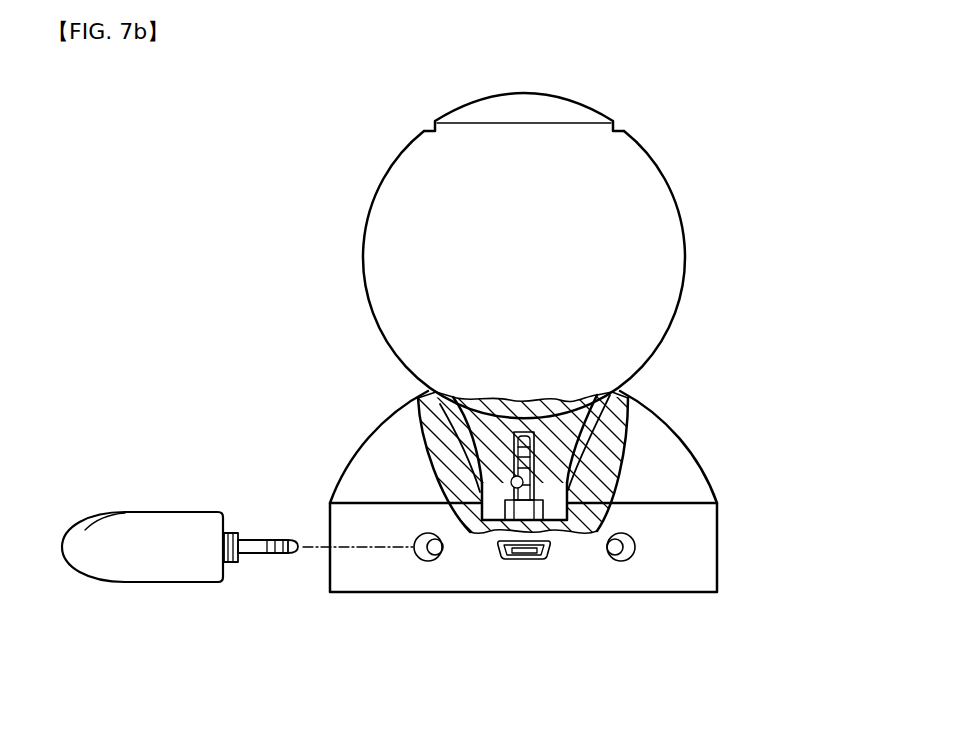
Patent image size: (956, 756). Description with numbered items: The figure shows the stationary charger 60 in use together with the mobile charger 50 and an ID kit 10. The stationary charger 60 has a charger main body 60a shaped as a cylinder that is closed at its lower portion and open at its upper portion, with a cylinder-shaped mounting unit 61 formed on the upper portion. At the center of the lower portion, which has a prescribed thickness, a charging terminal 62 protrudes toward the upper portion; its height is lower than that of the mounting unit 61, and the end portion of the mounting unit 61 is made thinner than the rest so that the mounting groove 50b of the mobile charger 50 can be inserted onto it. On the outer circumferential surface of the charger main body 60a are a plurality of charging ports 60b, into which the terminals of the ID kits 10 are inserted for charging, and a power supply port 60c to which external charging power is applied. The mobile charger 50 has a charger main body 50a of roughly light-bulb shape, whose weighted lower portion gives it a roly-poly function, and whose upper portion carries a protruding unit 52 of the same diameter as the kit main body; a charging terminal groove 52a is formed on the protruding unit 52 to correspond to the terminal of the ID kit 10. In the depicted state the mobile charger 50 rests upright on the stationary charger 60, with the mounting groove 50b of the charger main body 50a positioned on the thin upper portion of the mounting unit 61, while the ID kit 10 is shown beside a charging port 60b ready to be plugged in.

The ID kit 10 is at (162, 498).
The mobile charger 50 is at (463, 251).
The charger main body 50a is at (412, 193).
The mounting groove 50b is at (433, 127).
The protruding unit 52 is at (515, 456).
The charging terminal groove 52a is at (511, 481).
The stationary charger 60 is at (593, 532).
The charger main body 60a is at (698, 551).
The charging ports 60b is at (425, 562).
The power supply port 60c is at (518, 562).
The mounting unit 61 is at (668, 457).
The charging terminal 62 is at (565, 458).